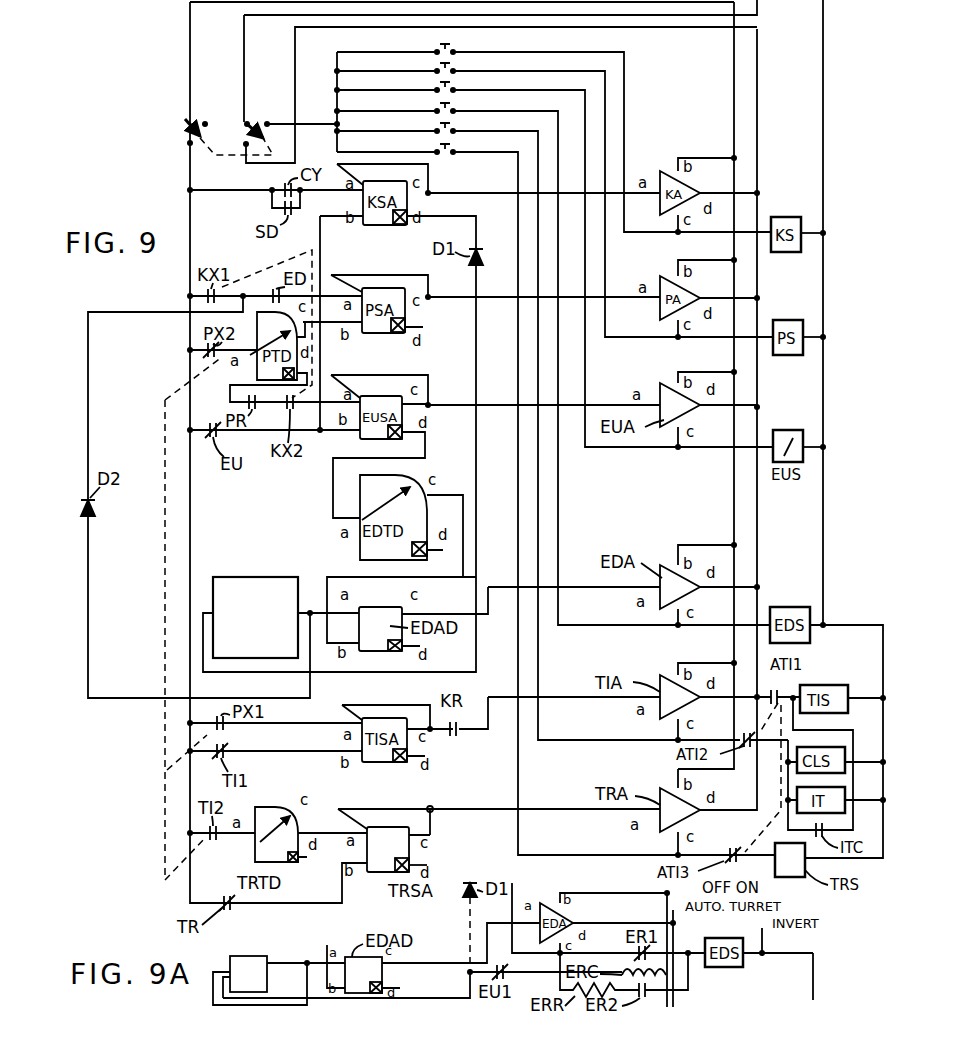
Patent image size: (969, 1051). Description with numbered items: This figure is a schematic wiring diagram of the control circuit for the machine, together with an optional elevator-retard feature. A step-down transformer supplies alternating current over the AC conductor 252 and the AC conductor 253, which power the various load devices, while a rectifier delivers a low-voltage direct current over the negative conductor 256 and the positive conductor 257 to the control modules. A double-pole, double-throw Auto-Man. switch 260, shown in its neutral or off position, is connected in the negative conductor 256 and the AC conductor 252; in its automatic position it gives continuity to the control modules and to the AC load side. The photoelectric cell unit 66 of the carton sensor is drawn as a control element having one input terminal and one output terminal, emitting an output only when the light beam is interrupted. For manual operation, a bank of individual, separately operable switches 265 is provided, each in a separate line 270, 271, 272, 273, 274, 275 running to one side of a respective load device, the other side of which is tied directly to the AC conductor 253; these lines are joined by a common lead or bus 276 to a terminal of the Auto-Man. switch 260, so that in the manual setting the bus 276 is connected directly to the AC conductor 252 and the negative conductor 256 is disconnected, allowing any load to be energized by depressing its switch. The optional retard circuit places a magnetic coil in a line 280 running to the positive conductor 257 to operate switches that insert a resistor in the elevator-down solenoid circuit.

In FIG. 9, the negative conductor 256 is at (190, 26).
In FIG. 9, the Auto-Man. switch 260 is at (172, 122).
In FIG. 9, the common lead or bus 276 is at (311, 122).
In FIG. 9, the switches 265 is at (459, 88).
In FIG. 9, the line 270 is at (544, 52).
In FIG. 9, the line 271 is at (605, 78).
In FIG. 9, the line 272 is at (585, 118).
In FIG. 9, the line 273 is at (558, 365).
In FIG. 9A, the line 273 is at (512, 887).
In FIG. 9, the line 274 is at (538, 487).
In FIG. 9, the line 275 is at (518, 757).
In FIG. 9, the positive conductor 257 is at (734, 93).
In FIG. 9A, the positive conductor 257 is at (667, 893).
In FIG. 9, the AC conductor 252 is at (757, 529).
In FIG. 9A, the AC conductor 252 is at (673, 1003).
In FIG. 9, the photoelectric cell unit 66 is at (262, 577).
In FIG. 9A, the photoelectric cell unit 66 is at (250, 956).
In FIG. 9A, the line 280 is at (510, 976).
In FIG. 9A, the AC conductor 253 is at (813, 996).